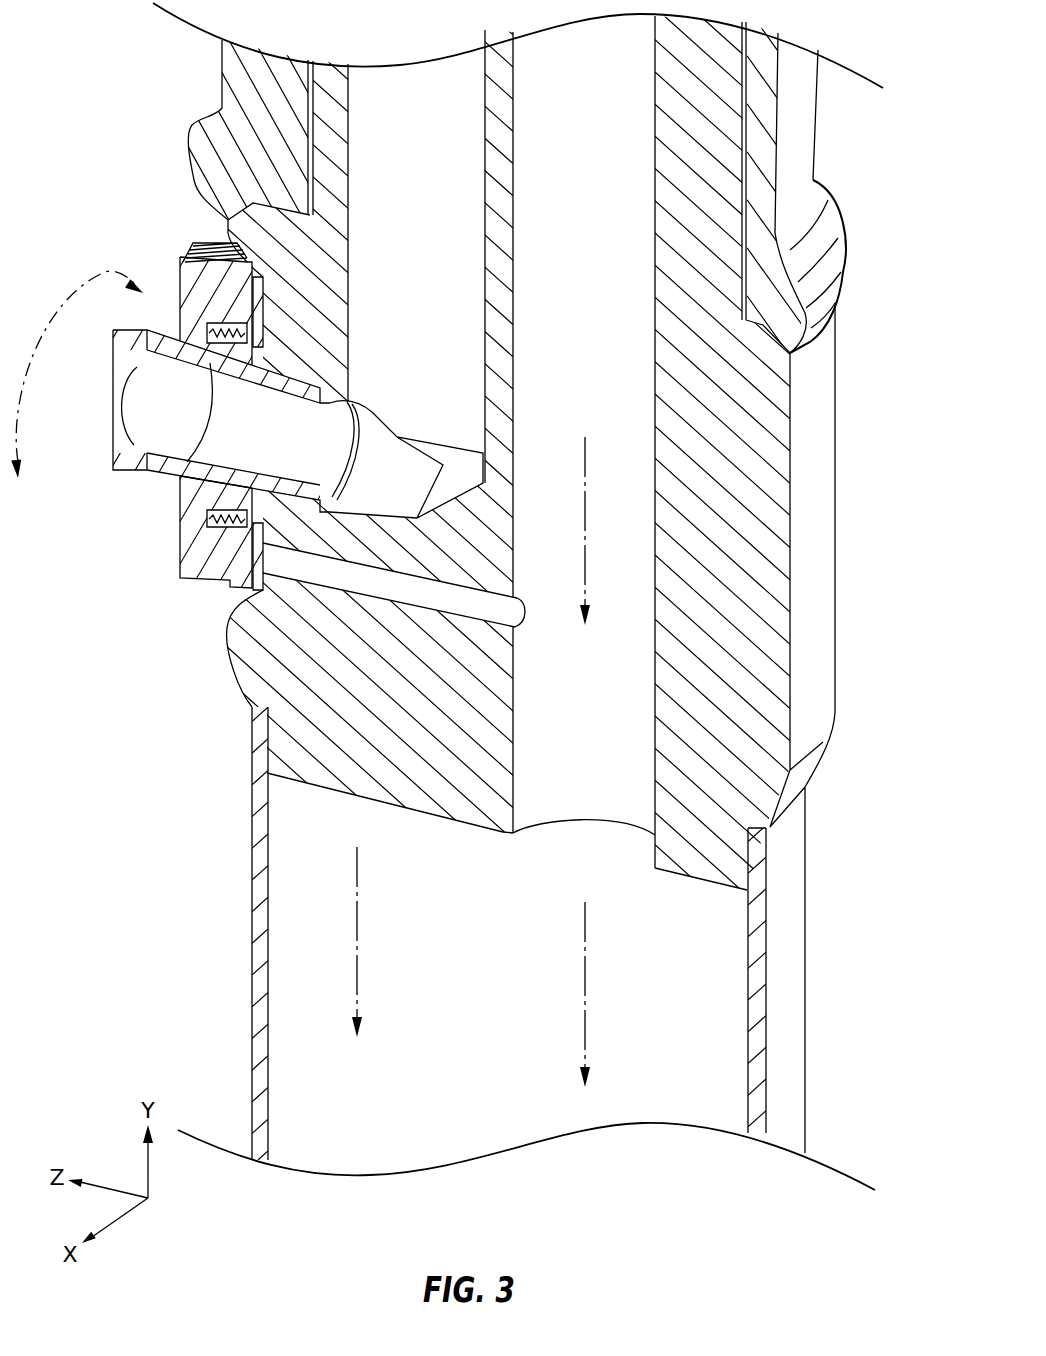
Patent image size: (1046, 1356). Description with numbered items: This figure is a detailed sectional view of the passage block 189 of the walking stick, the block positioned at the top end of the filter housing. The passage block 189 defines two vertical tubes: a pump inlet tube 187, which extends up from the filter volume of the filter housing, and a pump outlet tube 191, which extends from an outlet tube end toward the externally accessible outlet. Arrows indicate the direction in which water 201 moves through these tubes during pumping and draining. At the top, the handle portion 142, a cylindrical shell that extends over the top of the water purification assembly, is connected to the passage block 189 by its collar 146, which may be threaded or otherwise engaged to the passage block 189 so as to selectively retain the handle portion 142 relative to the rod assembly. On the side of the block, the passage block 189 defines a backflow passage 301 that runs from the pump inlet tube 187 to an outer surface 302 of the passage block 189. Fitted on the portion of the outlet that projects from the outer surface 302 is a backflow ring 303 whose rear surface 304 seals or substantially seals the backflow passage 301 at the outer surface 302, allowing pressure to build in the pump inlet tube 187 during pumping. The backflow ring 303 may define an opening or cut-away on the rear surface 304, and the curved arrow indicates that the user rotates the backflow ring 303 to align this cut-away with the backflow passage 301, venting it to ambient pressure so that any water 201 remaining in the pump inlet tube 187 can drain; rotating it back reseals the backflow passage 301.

The handle portion 142 is at (802, 150).
The collar 146 is at (820, 278).
The pump inlet tube 187 is at (584, 442).
The passage block 189 is at (817, 623).
The pump outlet tube 191 is at (416, 256).
The water 201 is at (587, 560).
The backflow passage 301 is at (370, 578).
The outer surface 302 is at (233, 670).
The backflow ring 303 is at (198, 568).
The rear surface 304 is at (232, 655).